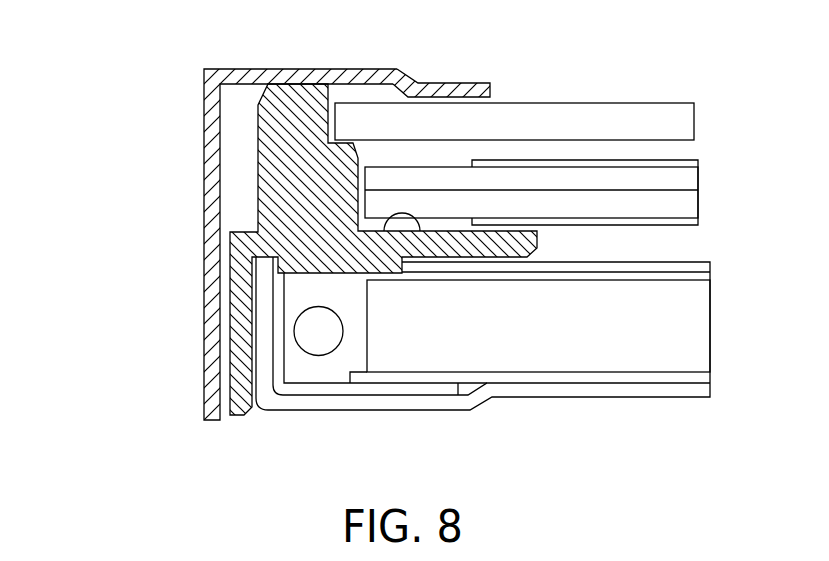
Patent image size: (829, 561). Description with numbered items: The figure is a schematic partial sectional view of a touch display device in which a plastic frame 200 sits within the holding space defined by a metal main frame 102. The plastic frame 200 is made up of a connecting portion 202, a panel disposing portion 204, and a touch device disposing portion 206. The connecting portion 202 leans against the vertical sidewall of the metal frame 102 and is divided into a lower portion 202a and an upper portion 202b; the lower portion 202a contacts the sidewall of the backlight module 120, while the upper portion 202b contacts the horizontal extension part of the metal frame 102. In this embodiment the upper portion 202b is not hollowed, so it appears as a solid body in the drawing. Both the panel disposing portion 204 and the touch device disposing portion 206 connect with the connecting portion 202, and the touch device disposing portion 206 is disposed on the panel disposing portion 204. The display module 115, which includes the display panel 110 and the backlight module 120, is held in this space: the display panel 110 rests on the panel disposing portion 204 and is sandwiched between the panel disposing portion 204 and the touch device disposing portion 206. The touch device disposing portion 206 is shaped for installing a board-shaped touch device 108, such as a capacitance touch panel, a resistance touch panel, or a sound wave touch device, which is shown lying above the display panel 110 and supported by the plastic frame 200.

The frame 200 is at (67, 32).
The touch device disposing portion 206 is at (340, 157).
The main frame 102 is at (453, 93).
The connecting portion 202 is at (128, 170).
The upper portion 202b is at (290, 170).
The lower portion 202a is at (242, 275).
The panel disposing portion 204 is at (436, 242).
The touch device 108 is at (668, 122).
The display module 115 is at (763, 193).
The display panel 110 is at (718, 159).
The backlight module 120 is at (718, 262).